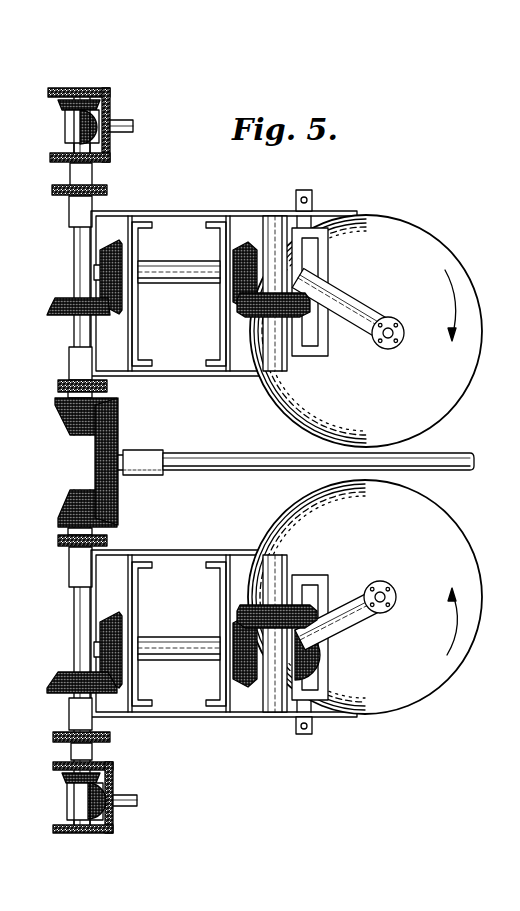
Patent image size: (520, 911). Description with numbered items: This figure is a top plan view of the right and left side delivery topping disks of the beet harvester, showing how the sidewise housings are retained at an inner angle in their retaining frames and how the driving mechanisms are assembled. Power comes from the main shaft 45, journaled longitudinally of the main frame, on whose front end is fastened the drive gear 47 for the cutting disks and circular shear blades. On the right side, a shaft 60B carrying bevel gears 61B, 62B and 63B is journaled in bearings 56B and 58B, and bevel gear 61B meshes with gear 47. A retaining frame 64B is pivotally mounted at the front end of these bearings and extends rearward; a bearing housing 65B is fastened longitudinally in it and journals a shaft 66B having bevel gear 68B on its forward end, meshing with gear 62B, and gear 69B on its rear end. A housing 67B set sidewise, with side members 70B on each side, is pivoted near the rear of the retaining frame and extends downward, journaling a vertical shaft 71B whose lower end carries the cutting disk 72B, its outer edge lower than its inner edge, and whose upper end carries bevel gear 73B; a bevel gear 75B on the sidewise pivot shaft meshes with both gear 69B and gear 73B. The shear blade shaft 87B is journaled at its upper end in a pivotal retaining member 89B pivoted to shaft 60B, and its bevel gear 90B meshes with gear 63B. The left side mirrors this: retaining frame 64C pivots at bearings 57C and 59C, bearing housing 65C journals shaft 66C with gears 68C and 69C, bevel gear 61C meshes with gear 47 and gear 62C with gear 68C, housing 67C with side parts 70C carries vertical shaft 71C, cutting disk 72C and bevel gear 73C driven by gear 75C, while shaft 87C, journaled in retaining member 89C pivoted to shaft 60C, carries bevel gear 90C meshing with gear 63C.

The main shaft 45 is at (210, 453).
The gear 47 is at (95, 476).
The bearing 56B is at (52, 189).
The bearing 57C is at (54, 737).
The bearing 58B is at (60, 385).
The bearing 59C is at (62, 540).
The shaft 60B is at (73, 335).
The shaft 60C is at (73, 606).
The bevel gear 61B is at (70, 418).
The bevel gear 61C is at (70, 508).
The bevel gear 62B is at (55, 305).
The bevel gear 62C is at (56, 681).
The bevel gear 63B is at (58, 104).
The bevel gear 63C is at (62, 779).
The retaining frame 64B is at (155, 211).
The retaining frame 64C is at (180, 550).
The bearing housing 65B is at (158, 261).
The bearing housing 65C is at (170, 637).
The shaft 66B is at (94, 272).
The shaft 66C is at (94, 649).
The housing 67B is at (366, 306).
The housing 67C is at (368, 578).
The bevel gear 68B is at (106, 314).
The bevel gear 68C is at (110, 614).
The gear 69B is at (236, 292).
The gear 69C is at (234, 680).
The side members 70B is at (300, 190).
The side parts 70C is at (313, 532).
The vertical shaft 71B is at (404, 333).
The vertical shaft 71C is at (396, 590).
The cutting disk 72B is at (432, 394).
The cutting disk 72C is at (440, 545).
The bevel gear 73B is at (282, 262).
The bevel gear 73C is at (292, 662).
The bevel gear 75B is at (255, 318).
The bevel gear 75C is at (252, 605).
The shaft 87B is at (130, 120).
The shaft 87C is at (137, 800).
The pivotal retaining member 89B is at (77, 88).
The pivotal retaining member 89C is at (104, 833).
The bevel gear 90B is at (103, 110).
The bevel gear 90C is at (70, 800).